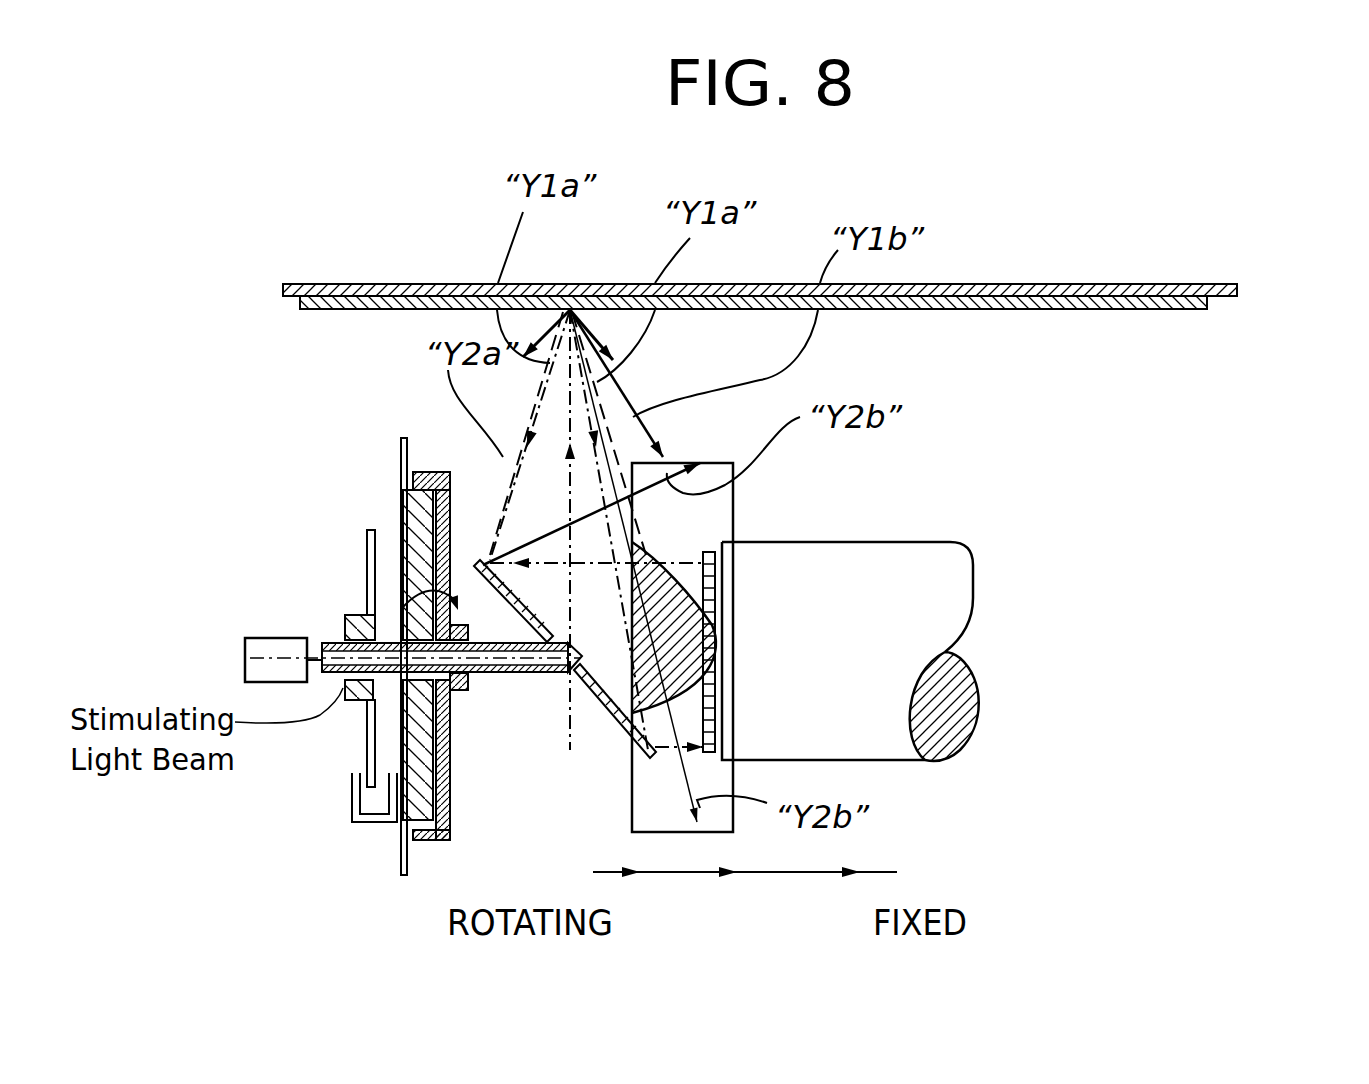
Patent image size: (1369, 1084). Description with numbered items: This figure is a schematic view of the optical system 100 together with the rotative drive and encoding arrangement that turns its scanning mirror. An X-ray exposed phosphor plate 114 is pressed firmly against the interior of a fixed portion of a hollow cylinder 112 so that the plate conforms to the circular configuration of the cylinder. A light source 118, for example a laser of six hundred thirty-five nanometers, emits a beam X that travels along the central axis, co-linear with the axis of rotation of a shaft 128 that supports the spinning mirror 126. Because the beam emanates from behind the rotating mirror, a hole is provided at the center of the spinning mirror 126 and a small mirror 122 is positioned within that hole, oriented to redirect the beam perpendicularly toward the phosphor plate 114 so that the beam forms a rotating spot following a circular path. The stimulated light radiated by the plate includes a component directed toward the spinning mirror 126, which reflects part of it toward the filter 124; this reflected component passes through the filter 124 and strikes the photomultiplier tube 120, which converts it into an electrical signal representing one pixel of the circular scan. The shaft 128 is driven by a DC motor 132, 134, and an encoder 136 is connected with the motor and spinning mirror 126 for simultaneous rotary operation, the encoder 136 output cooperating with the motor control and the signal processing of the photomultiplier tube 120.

The optical system 100 is at (817, 295).
The hollow cylinder 112 is at (1238, 290).
The phosphor plate 114 is at (666, 312).
The light source 118 is at (280, 636).
The photomultiplier tube 120 is at (866, 690).
The small mirror 122 is at (525, 576).
The filter 124 is at (711, 550).
The spinning mirror 126 is at (600, 713).
The shaft 128 is at (519, 675).
The DC motor 132 is at (450, 822).
The DC motor 134 is at (400, 855).
The encoder 136 is at (367, 745).